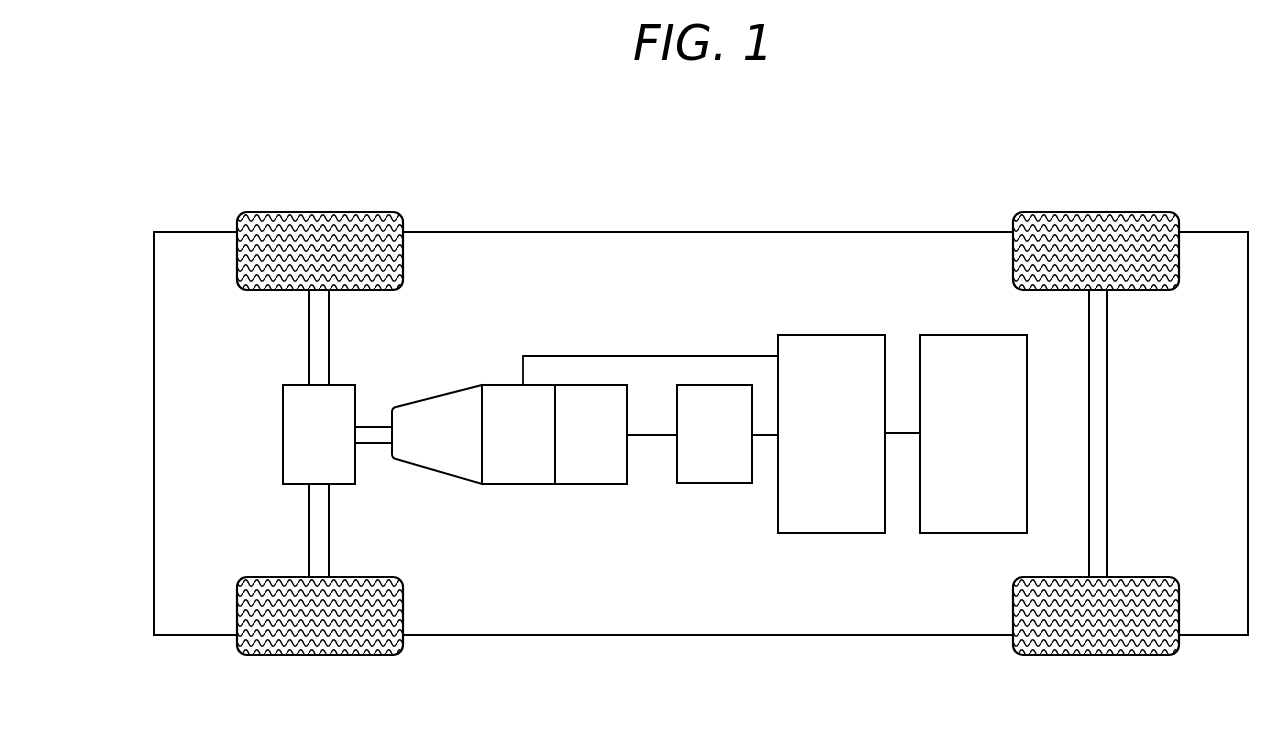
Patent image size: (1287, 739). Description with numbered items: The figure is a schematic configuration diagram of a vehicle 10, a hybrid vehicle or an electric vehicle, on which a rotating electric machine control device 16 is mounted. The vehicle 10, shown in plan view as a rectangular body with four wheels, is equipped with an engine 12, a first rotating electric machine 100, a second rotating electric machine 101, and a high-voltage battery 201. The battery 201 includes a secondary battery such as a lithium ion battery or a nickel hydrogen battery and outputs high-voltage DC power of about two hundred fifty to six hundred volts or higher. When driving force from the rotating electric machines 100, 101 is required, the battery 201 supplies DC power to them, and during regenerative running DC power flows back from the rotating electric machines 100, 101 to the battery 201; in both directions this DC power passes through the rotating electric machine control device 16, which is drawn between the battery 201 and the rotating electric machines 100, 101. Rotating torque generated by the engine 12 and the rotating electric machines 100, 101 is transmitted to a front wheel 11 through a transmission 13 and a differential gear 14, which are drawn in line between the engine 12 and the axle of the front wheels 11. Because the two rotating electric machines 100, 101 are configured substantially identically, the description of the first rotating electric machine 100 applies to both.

The vehicle 10 is at (655, 225).
The front wheel 11 is at (313, 212).
The engine 12 is at (591, 434).
The transmission 13 is at (437, 434).
The differential gear 14 is at (319, 434).
The rotating electric machine control device 16 is at (831, 434).
The first rotating electric machine 100 is at (495, 447).
The second rotating electric machine 101 is at (689, 447).
The high-voltage battery 201 is at (973, 434).